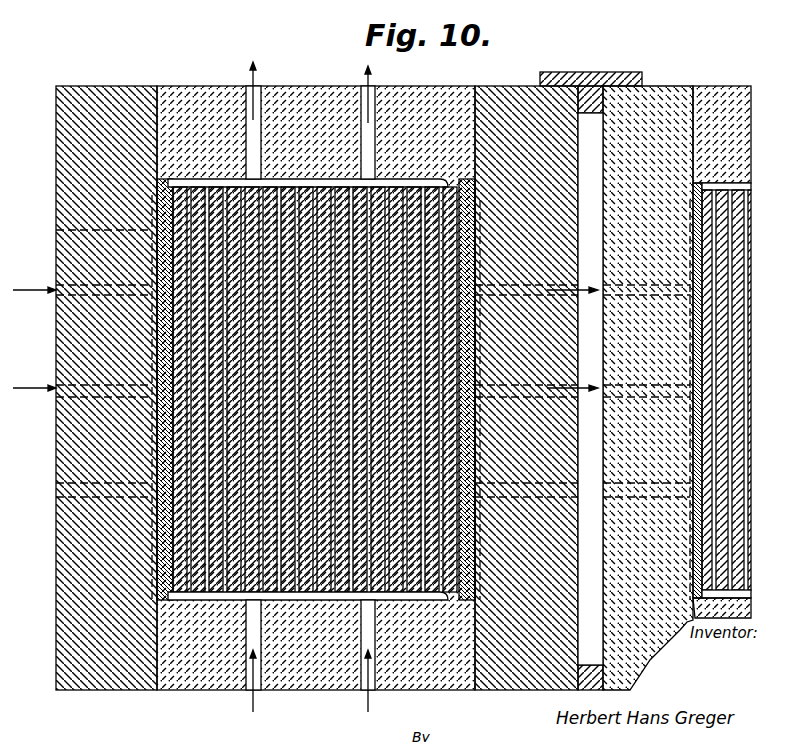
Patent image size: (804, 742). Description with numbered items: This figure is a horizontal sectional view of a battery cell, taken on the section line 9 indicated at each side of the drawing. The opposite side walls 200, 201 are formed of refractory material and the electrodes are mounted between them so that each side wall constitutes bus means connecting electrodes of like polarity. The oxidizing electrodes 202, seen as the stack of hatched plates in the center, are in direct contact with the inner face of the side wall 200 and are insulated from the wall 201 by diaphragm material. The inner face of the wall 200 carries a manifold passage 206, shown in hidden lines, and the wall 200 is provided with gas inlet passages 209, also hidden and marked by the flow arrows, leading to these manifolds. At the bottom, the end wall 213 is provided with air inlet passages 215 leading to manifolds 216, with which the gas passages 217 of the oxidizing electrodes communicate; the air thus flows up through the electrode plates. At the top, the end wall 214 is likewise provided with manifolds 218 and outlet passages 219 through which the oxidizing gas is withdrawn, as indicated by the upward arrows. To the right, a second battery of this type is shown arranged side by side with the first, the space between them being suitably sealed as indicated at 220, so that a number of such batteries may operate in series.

The section line 9— 9 is at (56, 491).
The side wall 200 is at (120, 86).
The opposite side wall 201 is at (513, 92).
The oxidizing electrodes 202 is at (410, 190).
The manifold passage 206 is at (152, 230).
The gas inlet passages 209 is at (75, 385).
The end wall 213 is at (415, 686).
The end wall 214 is at (288, 86).
The air inlet passages 215 is at (258, 686).
The manifolds 216 is at (165, 600).
The gas passages of the oxidizing electrodes 217 is at (190, 537).
The manifolds 218 is at (387, 185).
The outlet passages 219 is at (245, 88).
The seal 220 is at (624, 82).